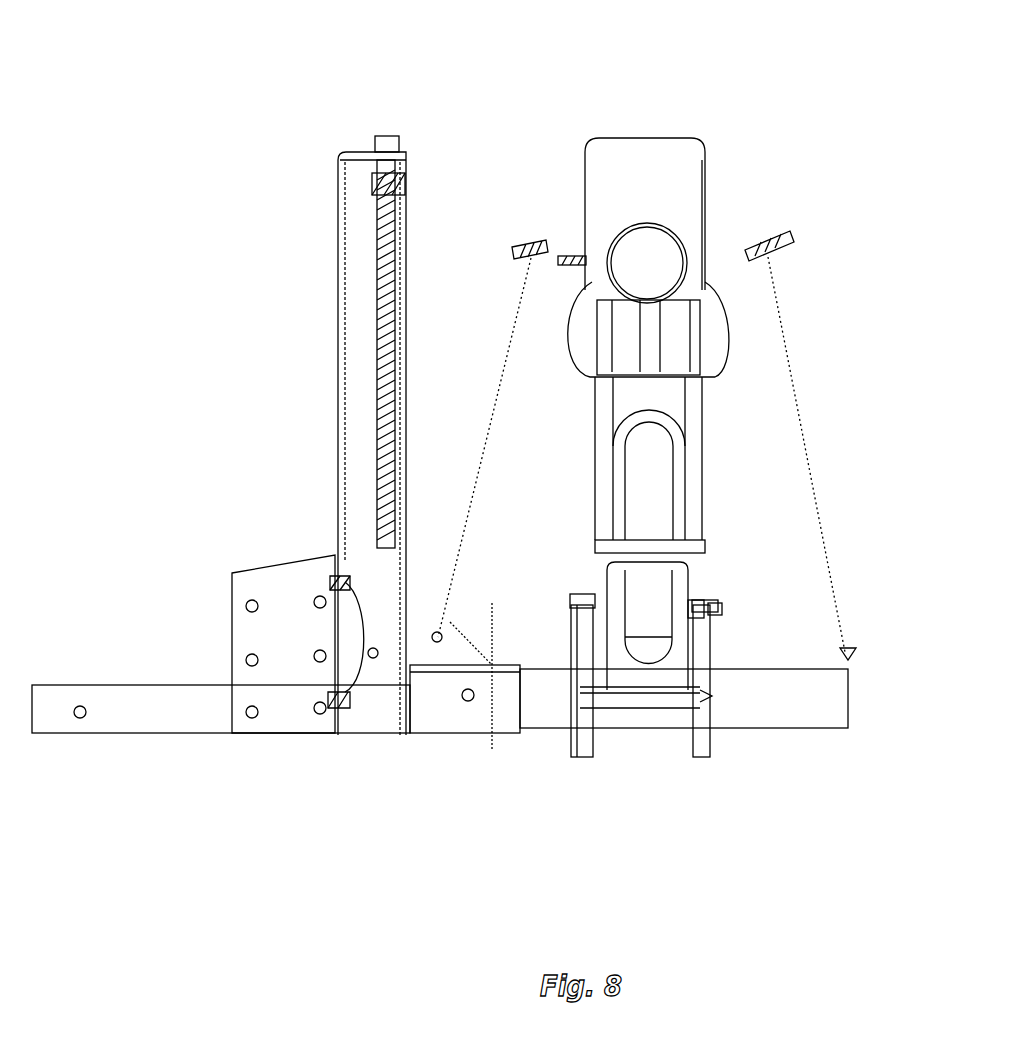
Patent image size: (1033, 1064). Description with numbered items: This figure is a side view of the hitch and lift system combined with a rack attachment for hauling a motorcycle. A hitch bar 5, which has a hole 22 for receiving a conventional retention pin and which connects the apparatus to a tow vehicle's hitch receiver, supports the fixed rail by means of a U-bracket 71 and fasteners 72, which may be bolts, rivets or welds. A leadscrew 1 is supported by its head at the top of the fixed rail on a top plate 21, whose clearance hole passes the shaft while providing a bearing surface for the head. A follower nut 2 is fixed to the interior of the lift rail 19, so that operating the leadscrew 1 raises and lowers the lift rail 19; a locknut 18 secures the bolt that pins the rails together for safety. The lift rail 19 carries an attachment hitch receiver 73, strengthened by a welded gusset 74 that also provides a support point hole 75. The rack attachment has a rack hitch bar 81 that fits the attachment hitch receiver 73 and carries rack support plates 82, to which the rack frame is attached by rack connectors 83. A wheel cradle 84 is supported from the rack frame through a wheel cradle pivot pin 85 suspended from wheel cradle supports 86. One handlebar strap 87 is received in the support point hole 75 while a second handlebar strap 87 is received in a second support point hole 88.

The leadscrew 1 is at (403, 136).
The follower nut 2 is at (408, 186).
The hitch bar 5 is at (138, 683).
The locknut 18 is at (372, 660).
The lift rail 19 is at (418, 170).
The top plate 21 is at (352, 152).
The hole 22 is at (466, 700).
The U-bracket 71 is at (270, 563).
The fasteners 72 is at (338, 590).
The attachment hitch receiver 73 is at (481, 740).
The gusset 74 is at (452, 620).
The support point hole 75 is at (437, 632).
The rack hitch bar 81 is at (822, 728).
The rack support plates 82 is at (708, 748).
The rack connectors 83 is at (718, 695).
The wheel cradle 84 is at (690, 568).
The wheel cradle pivot pin 85 is at (722, 610).
The wheel cradle supports 86 is at (702, 602).
The handlebar strap 87 is at (492, 443).
The second support point hole 88 is at (852, 648).